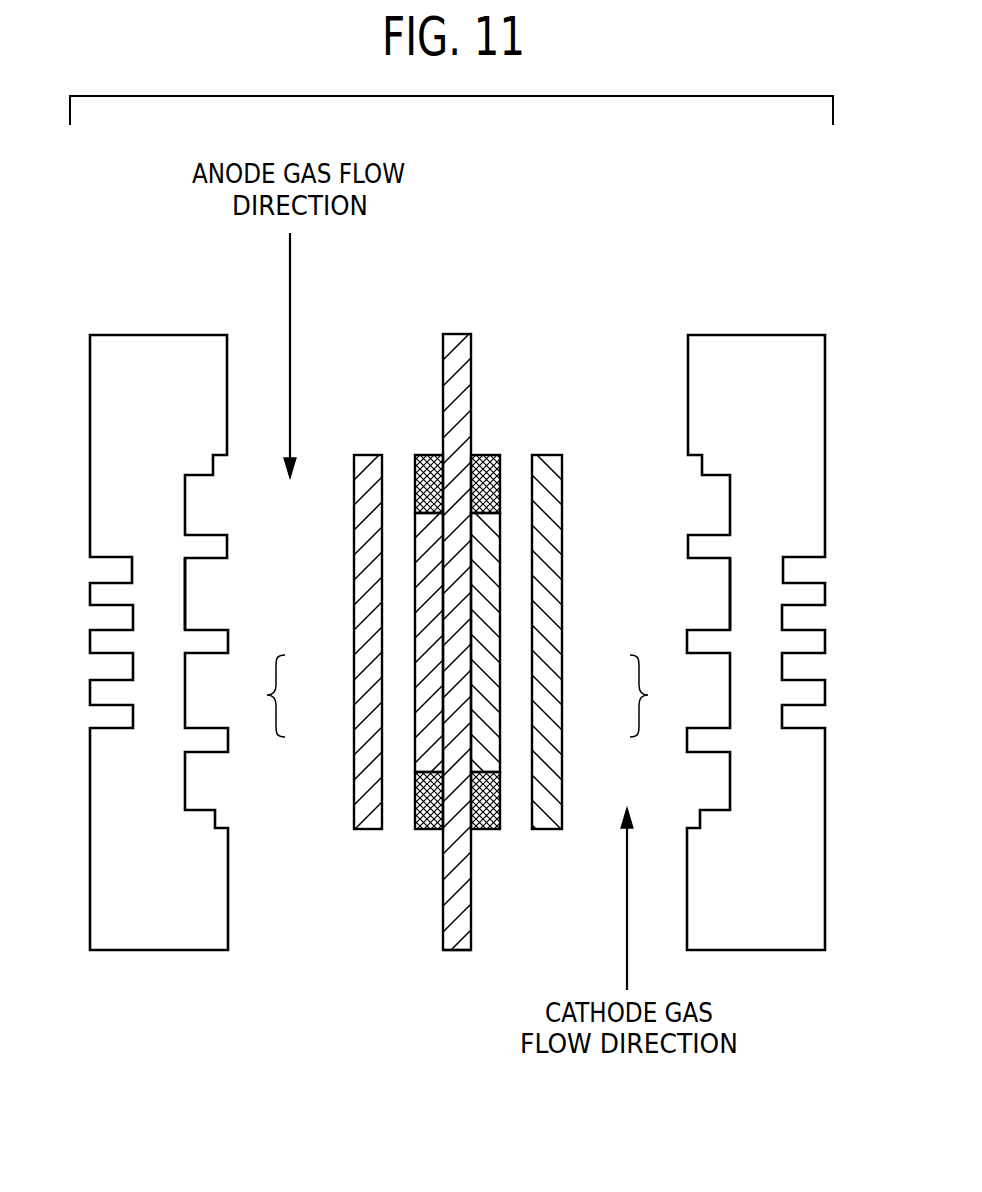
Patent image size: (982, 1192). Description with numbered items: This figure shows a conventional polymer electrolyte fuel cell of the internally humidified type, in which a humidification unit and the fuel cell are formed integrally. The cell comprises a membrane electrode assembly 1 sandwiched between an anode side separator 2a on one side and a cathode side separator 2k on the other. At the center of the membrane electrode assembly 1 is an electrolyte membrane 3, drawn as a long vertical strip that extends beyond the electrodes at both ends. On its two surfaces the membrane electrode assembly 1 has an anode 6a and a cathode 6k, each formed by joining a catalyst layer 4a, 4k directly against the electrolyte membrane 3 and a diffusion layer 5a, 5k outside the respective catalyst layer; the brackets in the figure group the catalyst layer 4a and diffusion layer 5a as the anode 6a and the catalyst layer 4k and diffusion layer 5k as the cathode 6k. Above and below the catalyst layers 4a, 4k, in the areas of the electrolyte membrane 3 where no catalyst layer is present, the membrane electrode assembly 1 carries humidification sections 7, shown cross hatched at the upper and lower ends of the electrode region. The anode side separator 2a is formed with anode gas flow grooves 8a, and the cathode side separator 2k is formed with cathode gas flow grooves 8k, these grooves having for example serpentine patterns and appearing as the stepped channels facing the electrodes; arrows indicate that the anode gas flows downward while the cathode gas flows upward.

The membrane electrode assembly 1 is at (458, 334).
The anode side separator 2a is at (160, 334).
The cathode side separator 2k is at (737, 334).
The electrolyte membrane 3 is at (465, 950).
The catalyst layer 4a is at (428, 715).
The catalyst layer 4k is at (493, 718).
The diffusion layer 5a is at (365, 665).
The diffusion layer 5k is at (553, 665).
The anode 6a is at (260, 696).
The cathode 6k is at (659, 696).
The humidification section 7 is at (428, 455).
The anode gas flow groove 8a is at (203, 592).
The cathode gas flow groove 8k is at (717, 600).